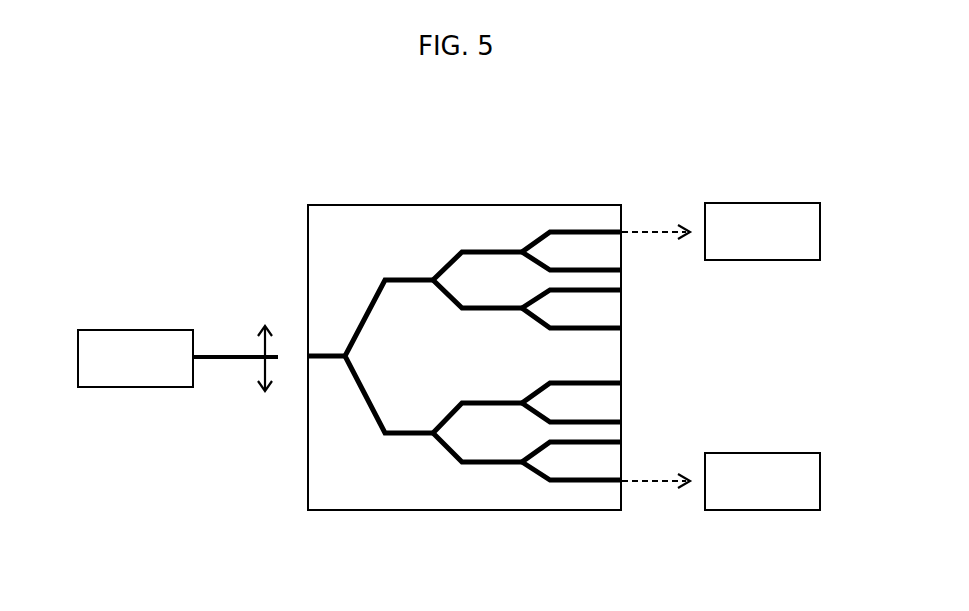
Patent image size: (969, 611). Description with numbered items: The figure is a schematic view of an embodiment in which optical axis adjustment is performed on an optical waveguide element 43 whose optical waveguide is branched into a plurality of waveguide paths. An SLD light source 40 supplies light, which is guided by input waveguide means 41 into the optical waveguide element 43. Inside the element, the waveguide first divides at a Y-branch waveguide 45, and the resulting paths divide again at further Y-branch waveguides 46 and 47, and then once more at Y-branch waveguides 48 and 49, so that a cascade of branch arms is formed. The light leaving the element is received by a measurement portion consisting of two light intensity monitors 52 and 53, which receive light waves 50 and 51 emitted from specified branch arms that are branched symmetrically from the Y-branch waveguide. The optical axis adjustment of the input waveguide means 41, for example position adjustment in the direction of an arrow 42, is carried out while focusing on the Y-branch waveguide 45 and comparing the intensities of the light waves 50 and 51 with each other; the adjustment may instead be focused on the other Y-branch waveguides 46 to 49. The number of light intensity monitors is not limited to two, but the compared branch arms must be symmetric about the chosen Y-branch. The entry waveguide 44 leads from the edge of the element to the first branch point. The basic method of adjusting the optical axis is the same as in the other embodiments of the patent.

The light source 40 is at (137, 372).
The input waveguide means 41 is at (220, 355).
The arrow 42 is at (260, 370).
The optical waveguide element 43 is at (455, 190).
The input waveguide 44 is at (340, 362).
The Y-branch waveguide 45 is at (342, 350).
The Y-branch waveguide 46 is at (431, 275).
The Y-branch waveguide 47 is at (431, 440).
The Y-branch waveguide 48 is at (520, 245).
The Y-branch waveguide 49 is at (518, 472).
The light wave 50 is at (650, 230).
The light wave 51 is at (650, 483).
The light intensity monitor 52 is at (763, 218).
The light intensity monitor 53 is at (763, 497).